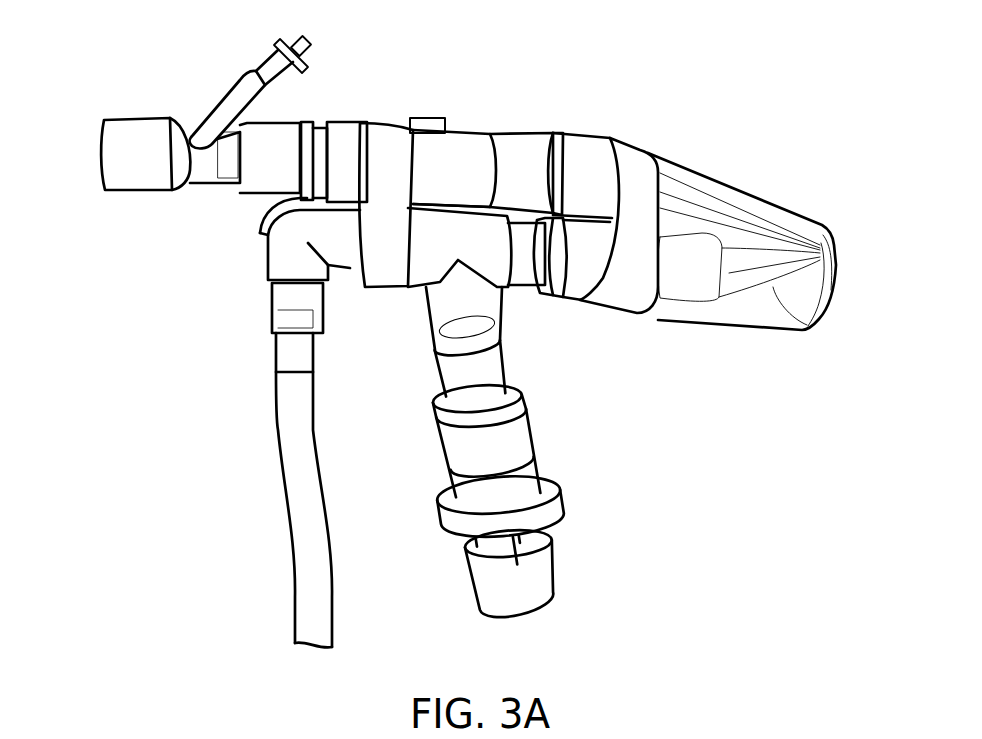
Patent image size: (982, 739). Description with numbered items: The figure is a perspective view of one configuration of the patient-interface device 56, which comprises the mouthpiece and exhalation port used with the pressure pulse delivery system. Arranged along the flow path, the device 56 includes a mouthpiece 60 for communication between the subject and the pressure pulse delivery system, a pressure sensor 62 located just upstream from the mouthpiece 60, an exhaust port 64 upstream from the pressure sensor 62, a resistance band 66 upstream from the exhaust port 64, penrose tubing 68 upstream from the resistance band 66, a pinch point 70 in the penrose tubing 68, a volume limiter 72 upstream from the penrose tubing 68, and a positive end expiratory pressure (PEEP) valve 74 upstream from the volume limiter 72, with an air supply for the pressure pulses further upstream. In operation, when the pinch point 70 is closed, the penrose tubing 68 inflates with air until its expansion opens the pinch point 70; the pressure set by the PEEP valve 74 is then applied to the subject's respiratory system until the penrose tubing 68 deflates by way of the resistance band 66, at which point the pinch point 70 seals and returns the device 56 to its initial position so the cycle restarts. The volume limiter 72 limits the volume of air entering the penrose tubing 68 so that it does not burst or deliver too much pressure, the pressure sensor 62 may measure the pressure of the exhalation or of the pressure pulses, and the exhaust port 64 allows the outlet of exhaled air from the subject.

The patient-interface device 56 is at (371, 675).
The mouthpiece 60 is at (145, 120).
The pressure sensor 62 is at (240, 83).
The exhaust port 64 is at (425, 117).
The resistance band 66 is at (588, 132).
The penrose tubing 68 is at (733, 192).
The pinch point 70 is at (826, 253).
The volume limiter 72 is at (708, 303).
The positive end expiratory pressure (PEEP) valve 74 is at (437, 442).